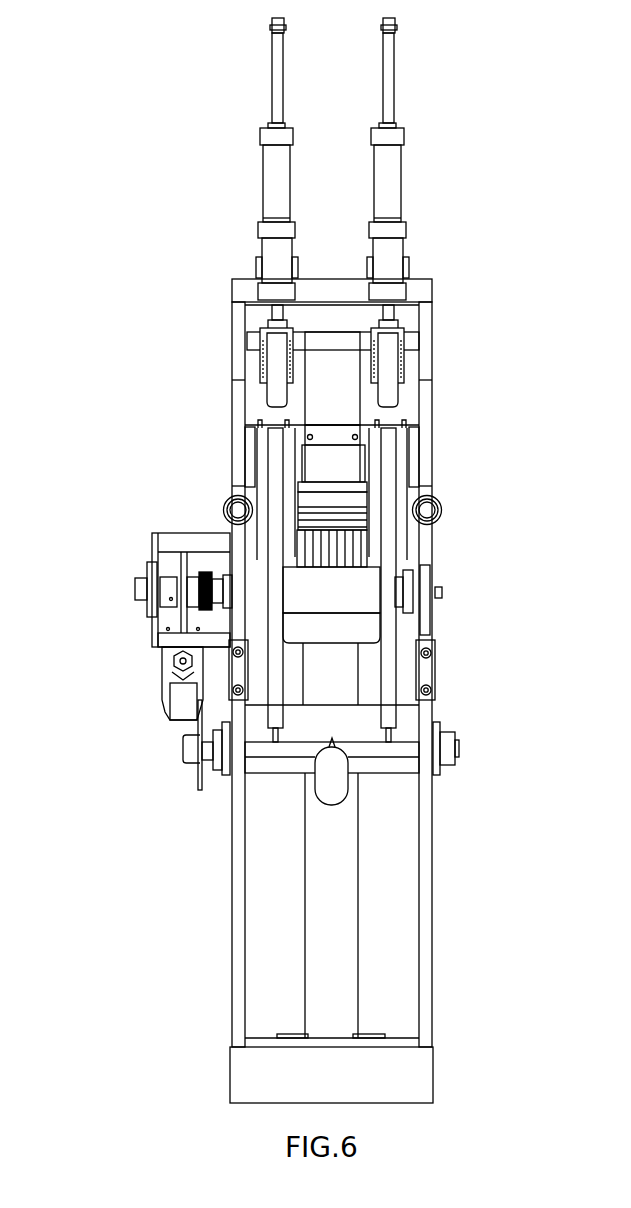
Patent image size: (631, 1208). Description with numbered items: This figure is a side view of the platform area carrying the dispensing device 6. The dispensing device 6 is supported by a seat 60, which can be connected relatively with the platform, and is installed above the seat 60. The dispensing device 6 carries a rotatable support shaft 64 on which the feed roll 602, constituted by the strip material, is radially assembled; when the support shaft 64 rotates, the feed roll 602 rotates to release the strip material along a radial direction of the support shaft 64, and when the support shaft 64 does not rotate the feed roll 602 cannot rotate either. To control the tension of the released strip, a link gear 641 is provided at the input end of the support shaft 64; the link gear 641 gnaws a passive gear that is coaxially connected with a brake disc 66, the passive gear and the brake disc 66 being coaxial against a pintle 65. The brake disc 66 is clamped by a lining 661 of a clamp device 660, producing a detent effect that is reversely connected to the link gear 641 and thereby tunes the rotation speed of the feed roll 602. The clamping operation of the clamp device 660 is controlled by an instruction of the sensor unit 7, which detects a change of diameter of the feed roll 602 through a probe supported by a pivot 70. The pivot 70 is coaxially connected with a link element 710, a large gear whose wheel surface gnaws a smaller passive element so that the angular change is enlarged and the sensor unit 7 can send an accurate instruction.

The dispensing device 6 is at (193, 478).
The seat 60 is at (423, 862).
The feed roll 602 is at (385, 660).
The support shaft 64 is at (350, 595).
The link gear 641 is at (205, 570).
The pintle 65 is at (133, 590).
The brake disc 66 is at (183, 565).
The lining 661 is at (165, 625).
The clamp device 660 is at (149, 702).
The sensor unit 7 is at (146, 752).
The pivot 70 is at (211, 760).
The link element 710 is at (198, 775).